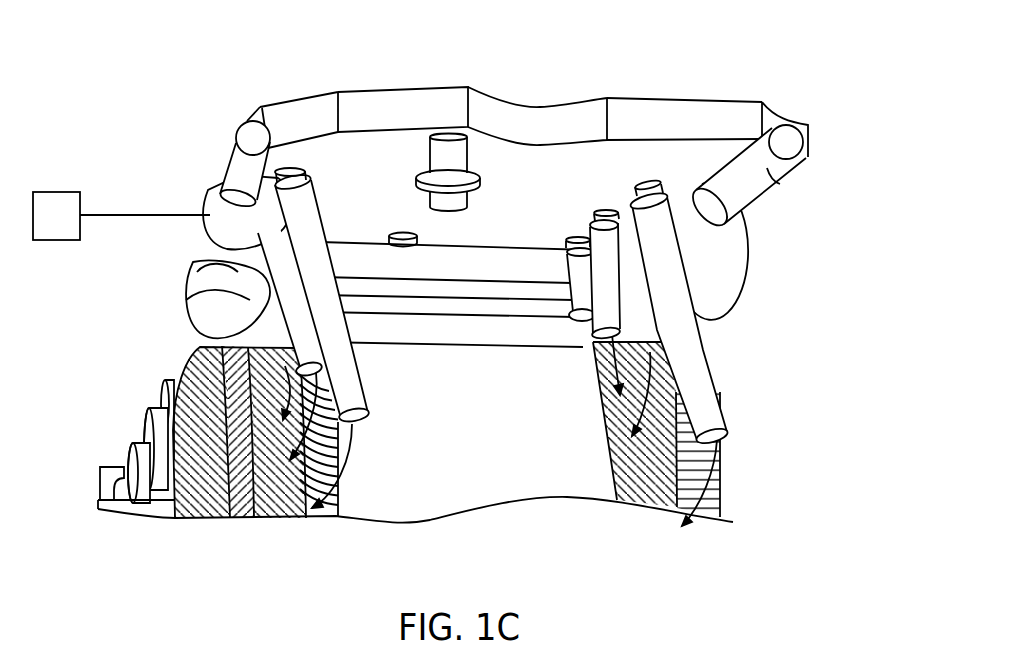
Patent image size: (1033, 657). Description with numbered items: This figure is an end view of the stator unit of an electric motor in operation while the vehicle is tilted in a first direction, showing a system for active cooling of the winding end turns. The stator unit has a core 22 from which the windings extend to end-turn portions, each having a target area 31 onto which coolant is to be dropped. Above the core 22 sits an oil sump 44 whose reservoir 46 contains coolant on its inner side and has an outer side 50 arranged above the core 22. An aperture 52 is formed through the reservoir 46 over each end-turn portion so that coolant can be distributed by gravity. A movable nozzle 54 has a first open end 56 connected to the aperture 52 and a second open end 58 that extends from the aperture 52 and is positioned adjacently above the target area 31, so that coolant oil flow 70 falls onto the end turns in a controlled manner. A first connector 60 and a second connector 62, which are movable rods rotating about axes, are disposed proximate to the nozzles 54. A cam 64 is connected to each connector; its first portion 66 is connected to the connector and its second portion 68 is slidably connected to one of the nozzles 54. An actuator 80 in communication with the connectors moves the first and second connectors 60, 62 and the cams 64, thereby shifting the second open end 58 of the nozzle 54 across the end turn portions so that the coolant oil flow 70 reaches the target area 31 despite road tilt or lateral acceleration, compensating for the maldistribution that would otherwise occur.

The core 22 is at (481, 471).
The target area 31 is at (276, 480).
The oil sump 44 is at (730, 100).
The reservoir 46 is at (287, 113).
The outer side 50 is at (518, 180).
The aperture 52 is at (325, 190).
The movable nozzle 54 is at (742, 354).
The first open end 56 is at (673, 245).
The second open end 58 is at (720, 440).
The first connector 60 is at (247, 163).
The second connector 62 is at (775, 186).
The cam 64 is at (708, 277).
The first portion 66 is at (248, 233).
The second portion 68 is at (305, 278).
The coolant oil flow 70 is at (700, 490).
The actuator 80 is at (45, 231).